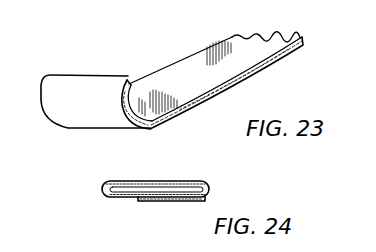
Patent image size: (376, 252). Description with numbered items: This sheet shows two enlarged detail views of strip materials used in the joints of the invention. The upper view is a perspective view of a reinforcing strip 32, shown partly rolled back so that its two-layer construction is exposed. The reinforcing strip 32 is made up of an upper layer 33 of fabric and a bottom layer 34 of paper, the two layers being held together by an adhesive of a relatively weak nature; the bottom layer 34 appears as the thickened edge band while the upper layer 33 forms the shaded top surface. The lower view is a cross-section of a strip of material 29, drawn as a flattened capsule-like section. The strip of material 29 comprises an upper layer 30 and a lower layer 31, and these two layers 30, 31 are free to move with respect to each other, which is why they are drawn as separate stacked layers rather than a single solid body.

In FIG. 24, the strip of material 29 is at (213, 191).
In FIG. 24, the upper layer 30 is at (165, 182).
In FIG. 24, the lower layer 31 is at (163, 201).
In FIG. 23, the reinforcing strip 32 is at (276, 72).
In FIG. 23, the upper layer of fabric 33 is at (208, 52).
In FIG. 23, the bottom layer of paper 34 is at (223, 94).